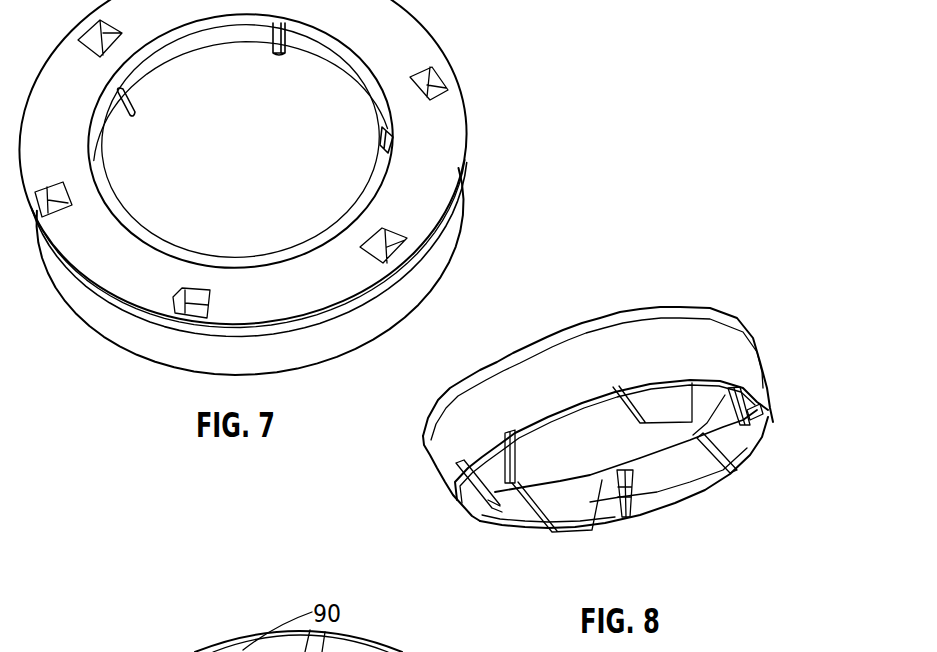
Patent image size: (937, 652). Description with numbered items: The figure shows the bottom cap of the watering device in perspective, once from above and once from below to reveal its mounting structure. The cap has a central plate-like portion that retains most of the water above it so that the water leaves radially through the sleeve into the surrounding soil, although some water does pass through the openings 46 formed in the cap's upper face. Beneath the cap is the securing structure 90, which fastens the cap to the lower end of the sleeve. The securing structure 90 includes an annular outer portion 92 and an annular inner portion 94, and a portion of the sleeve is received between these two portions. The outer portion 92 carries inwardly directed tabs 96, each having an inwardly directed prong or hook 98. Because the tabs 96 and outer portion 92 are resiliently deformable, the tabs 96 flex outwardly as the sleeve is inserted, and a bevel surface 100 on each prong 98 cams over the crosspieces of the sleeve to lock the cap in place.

In FIG. 7, the openings 46 is at (440, 78).
In FIG. 7, the annular outer portion 92 is at (455, 247).
In FIG. 8, the annular outer portion 92 is at (530, 528).
In FIG. 8, the securing structure 90 is at (733, 480).
In FIG. 8, the annular inner portion 94 is at (608, 530).
In FIG. 8, the inwardly directed tabs 96 is at (772, 436).
In FIG. 8, the prong 98 is at (750, 420).
In FIG. 8, the bevel surface 100 is at (745, 448).